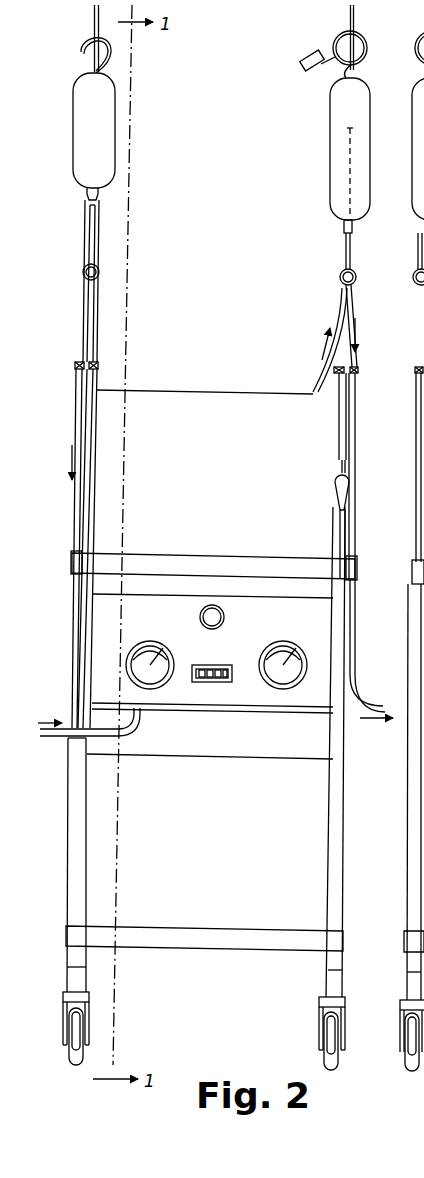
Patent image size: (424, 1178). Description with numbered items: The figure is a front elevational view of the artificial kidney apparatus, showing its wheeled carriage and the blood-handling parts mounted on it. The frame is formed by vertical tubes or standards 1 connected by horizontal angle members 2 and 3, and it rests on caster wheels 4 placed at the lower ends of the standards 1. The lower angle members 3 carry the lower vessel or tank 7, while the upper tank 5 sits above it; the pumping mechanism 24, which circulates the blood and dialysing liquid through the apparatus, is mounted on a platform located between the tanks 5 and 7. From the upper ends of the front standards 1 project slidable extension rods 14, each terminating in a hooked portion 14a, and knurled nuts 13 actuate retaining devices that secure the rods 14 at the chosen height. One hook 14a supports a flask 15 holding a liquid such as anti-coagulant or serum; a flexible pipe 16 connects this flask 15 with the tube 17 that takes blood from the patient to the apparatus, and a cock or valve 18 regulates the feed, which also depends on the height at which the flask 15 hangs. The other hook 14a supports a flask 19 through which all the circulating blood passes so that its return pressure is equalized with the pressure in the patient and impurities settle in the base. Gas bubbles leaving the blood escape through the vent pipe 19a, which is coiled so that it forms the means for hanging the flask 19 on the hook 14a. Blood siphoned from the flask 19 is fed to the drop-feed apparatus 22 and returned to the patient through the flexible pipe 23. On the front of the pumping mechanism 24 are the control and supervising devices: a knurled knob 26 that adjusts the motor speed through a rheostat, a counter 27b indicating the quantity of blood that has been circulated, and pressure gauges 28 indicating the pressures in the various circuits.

The vertical tube or standard 1 is at (76, 405).
The upper horizontal angle member 2 is at (72, 563).
The lower horizontal angle member 3 is at (66, 935).
The caster wheel 4 is at (69, 1020).
The tank 5 is at (207, 391).
The lower vessel or tank 7 is at (221, 758).
The knurled nut 13 is at (75, 363).
The extension rod 14 is at (83, 237).
The hooked portion 14a is at (94, 22).
The flask 15 is at (73, 104).
The flexible pipe or tube 16 is at (84, 306).
The tube 17 is at (50, 738).
The cock or valve 18 is at (83, 272).
The flask 19 is at (331, 97).
The vent pipe 19a is at (405, 33).
The drop-feed apparatus 22 is at (351, 486).
The flexible pipe 23 is at (375, 713).
The pumping mechanism 24 is at (150, 598).
The knurled knob 26 is at (225, 616).
The counter 27b is at (257, 660).
The pressure gauge 28 is at (160, 642).